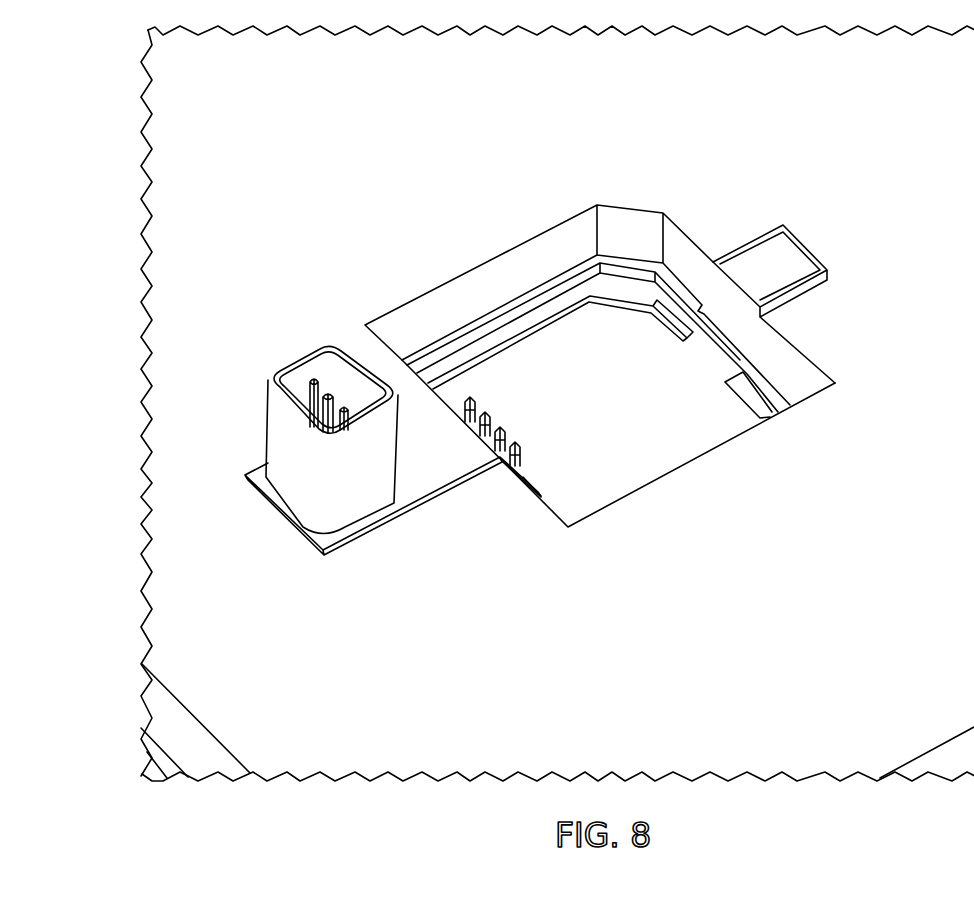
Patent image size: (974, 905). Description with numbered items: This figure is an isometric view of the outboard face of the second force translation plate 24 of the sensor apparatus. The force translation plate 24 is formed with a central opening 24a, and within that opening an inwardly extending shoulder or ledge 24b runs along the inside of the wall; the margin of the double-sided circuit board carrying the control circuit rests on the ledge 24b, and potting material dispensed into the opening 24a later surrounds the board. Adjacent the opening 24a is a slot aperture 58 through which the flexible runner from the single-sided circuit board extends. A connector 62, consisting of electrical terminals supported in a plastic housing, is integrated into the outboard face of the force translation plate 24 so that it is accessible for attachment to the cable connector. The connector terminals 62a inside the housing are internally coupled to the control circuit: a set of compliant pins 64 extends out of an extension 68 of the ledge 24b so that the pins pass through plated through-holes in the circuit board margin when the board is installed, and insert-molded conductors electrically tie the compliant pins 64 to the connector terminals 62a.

The force translation plate 24 is at (786, 700).
The central opening 24a is at (525, 262).
The ledge 24b is at (463, 328).
The slot aperture 58 is at (768, 270).
The connector 62 is at (370, 490).
The connector terminals 62a is at (330, 393).
The compliant pins 64 is at (478, 408).
The extension of ledge 68 is at (538, 487).